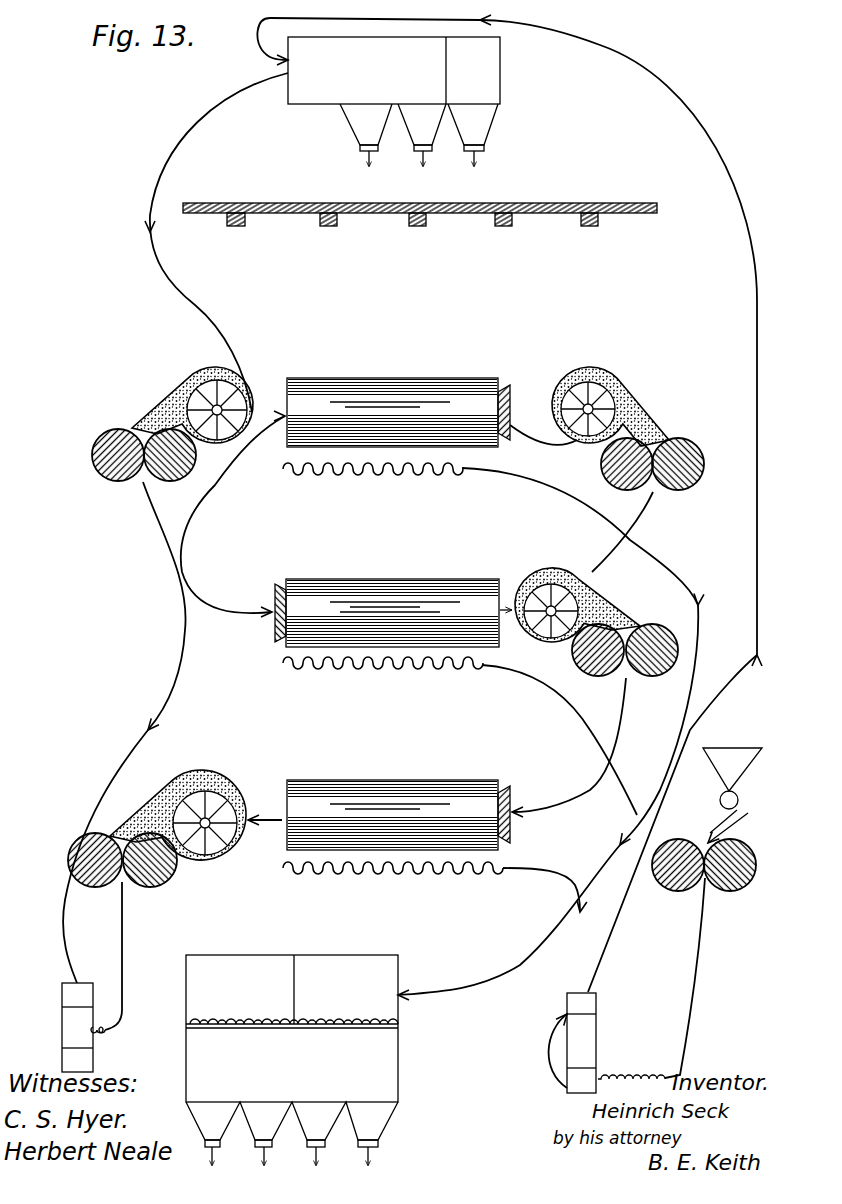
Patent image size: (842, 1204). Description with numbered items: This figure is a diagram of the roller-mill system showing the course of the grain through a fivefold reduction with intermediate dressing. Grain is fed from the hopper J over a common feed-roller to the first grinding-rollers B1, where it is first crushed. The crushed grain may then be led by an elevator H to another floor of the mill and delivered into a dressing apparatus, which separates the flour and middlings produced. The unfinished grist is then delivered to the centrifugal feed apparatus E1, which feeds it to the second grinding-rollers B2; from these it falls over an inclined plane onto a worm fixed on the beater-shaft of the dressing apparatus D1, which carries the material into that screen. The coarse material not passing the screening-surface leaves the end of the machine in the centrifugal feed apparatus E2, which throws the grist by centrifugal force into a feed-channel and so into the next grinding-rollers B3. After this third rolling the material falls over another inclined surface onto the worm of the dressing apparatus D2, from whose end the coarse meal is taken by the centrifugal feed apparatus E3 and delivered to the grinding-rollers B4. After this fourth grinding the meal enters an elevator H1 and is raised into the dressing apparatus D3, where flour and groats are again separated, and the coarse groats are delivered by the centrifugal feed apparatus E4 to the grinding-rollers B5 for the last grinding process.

The centrifugal feed apparatus E1 is at (172, 374).
The centrifugal feed apparatus E2 is at (575, 543).
The centrifugal feed apparatus E3 is at (215, 754).
The centrifugal feed apparatus E4 is at (585, 344).
The grinding-rollers B1 is at (758, 867).
The grinding-rollers B2 is at (92, 452).
The grinding-rollers B3 is at (650, 622).
The grinding-rollers B4 is at (178, 876).
The grinding-rollers B5 is at (705, 460).
The dressing apparatus D1 is at (312, 592).
The dressing apparatus D2 is at (320, 795).
The dressing apparatus D3 is at (327, 395).
The hopper J is at (742, 778).
The elevator H is at (628, 1038).
The elevator H1 is at (58, 1036).